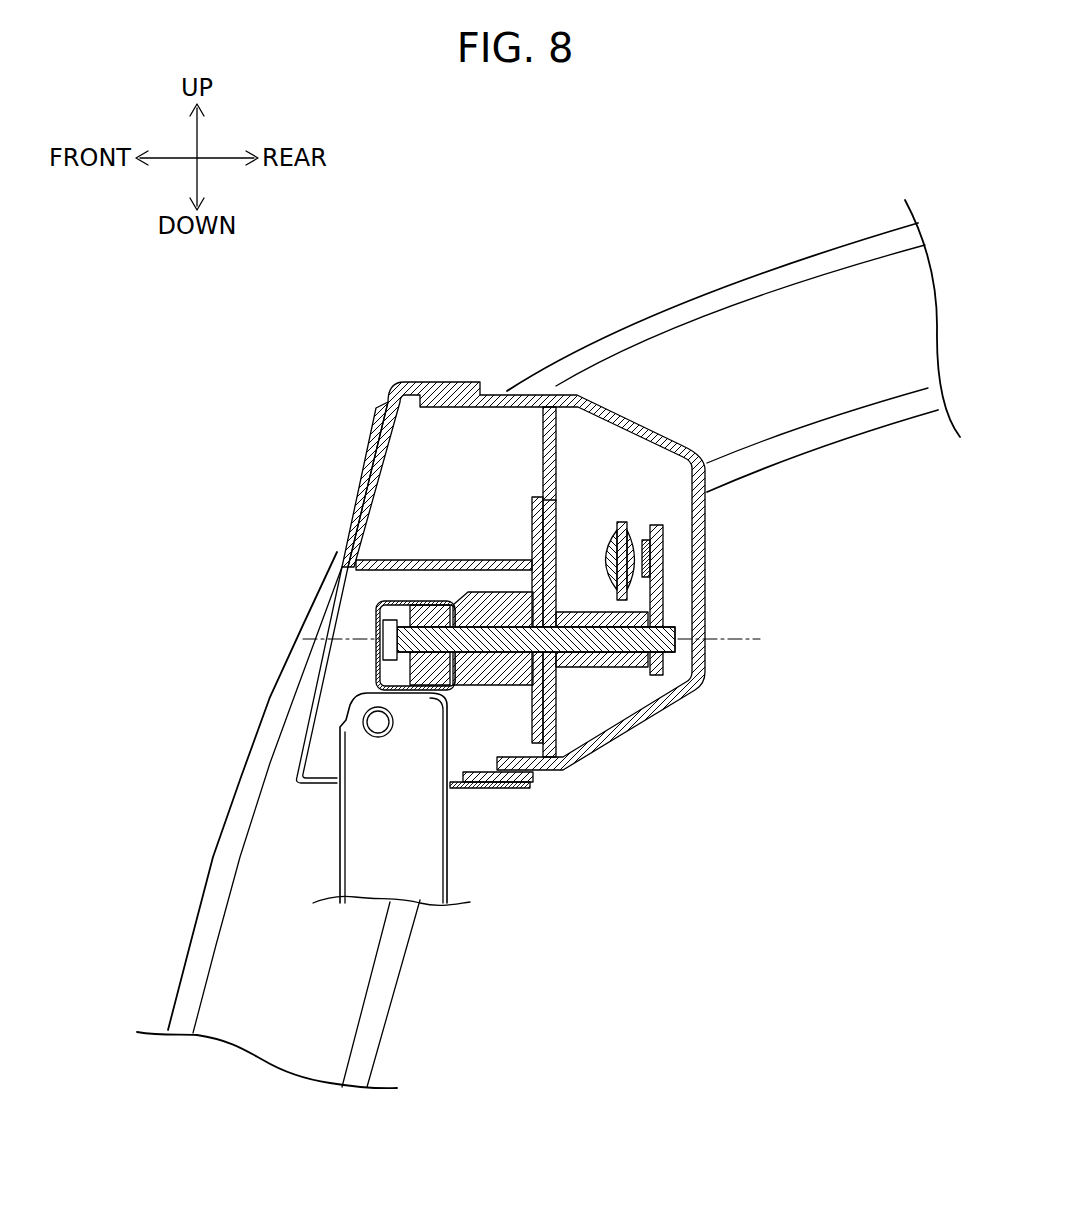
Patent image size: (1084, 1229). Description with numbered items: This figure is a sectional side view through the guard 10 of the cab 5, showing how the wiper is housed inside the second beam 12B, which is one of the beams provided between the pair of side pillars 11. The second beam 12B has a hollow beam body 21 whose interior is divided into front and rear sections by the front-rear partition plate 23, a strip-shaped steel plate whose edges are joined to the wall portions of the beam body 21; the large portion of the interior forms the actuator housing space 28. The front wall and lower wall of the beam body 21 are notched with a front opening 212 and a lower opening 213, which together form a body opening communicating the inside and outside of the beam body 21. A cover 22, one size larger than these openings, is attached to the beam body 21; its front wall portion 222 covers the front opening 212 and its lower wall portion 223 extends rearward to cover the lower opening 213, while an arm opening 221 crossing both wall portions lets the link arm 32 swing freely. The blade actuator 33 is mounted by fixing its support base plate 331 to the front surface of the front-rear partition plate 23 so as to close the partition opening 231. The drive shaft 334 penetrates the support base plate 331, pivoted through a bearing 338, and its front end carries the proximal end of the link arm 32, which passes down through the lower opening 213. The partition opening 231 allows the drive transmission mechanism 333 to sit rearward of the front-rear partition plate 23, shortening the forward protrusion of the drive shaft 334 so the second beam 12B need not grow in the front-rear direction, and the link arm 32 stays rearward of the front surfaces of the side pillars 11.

The cab 5 is at (733, 338).
The guard 10 is at (335, 745).
The side pillar 11 is at (705, 303).
The second beam 12B is at (485, 564).
The beam body 21 is at (485, 614).
The cover 22 is at (335, 745).
The front-rear partition plate 23 is at (597, 523).
The actuator housing space 28 is at (360, 607).
The link arm 32 is at (440, 862).
The blade actuator 33 is at (593, 657).
The front opening 212 is at (382, 460).
The lower opening 213 is at (497, 783).
The arm opening 221 is at (320, 697).
The front wall portion 222 is at (367, 470).
The lower wall portion 223 is at (486, 788).
The partition opening 231 is at (550, 510).
The support base plate 331 is at (532, 503).
The drive transmission mechanism 333 is at (672, 556).
The drive shaft 334 is at (665, 645).
The bearing 338 is at (503, 680).